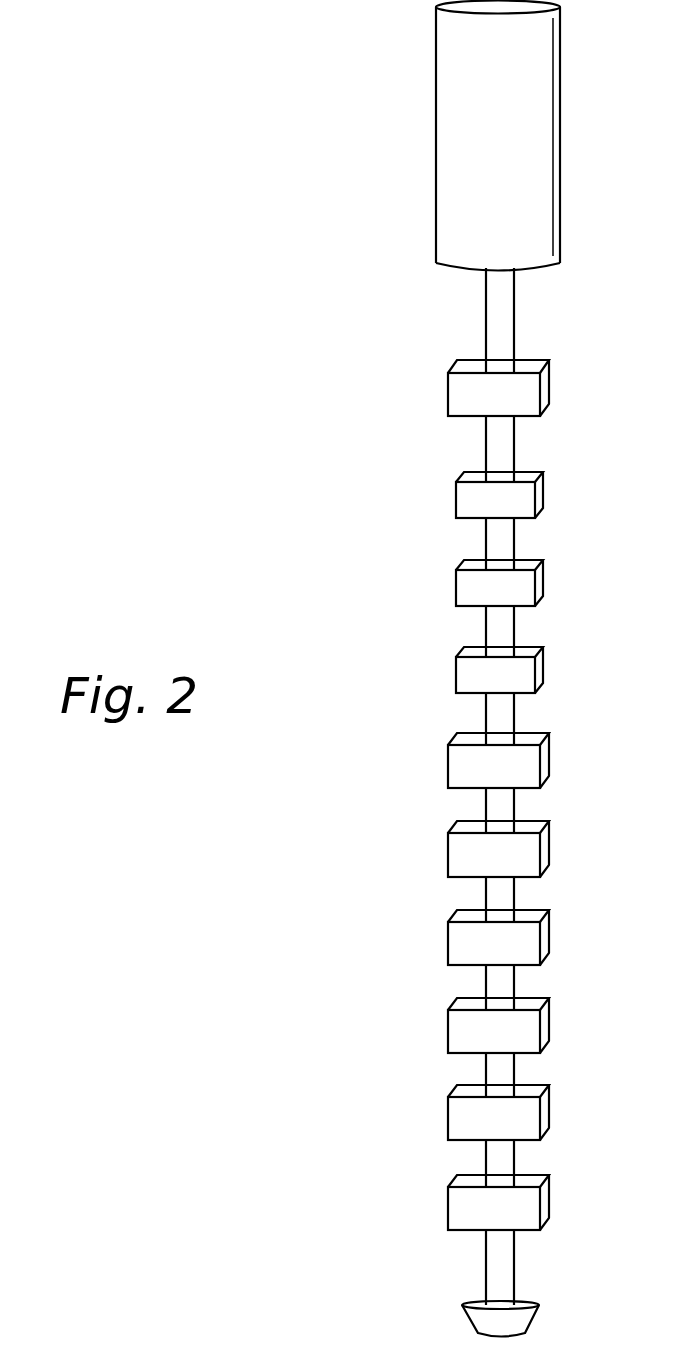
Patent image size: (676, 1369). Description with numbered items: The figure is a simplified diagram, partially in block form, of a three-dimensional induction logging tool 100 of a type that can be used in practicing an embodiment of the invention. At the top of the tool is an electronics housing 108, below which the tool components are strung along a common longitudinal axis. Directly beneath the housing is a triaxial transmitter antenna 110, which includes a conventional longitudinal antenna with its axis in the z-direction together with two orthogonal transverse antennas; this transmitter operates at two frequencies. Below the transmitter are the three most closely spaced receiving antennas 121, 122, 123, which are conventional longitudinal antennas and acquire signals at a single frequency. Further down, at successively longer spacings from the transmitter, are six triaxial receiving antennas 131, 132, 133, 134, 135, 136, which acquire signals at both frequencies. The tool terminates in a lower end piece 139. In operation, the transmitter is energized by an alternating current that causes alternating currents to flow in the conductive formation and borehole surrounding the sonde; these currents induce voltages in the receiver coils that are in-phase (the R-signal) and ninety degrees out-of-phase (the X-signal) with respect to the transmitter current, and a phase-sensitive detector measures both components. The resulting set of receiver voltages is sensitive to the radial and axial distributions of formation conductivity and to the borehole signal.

The three-dimensional induction logging tool 100 is at (197, 221).
The electronics housing 108 is at (436, 135).
The triaxial transmitter antenna 110 is at (448, 387).
The receiving antenna 121 is at (456, 497).
The receiving antenna 122 is at (456, 585).
The receiving antenna 123 is at (456, 673).
The triaxial receiving antenna 131 is at (448, 768).
The triaxial receiving antenna 132 is at (448, 855).
The triaxial receiving antenna 133 is at (448, 940).
The triaxial receiving antenna 134 is at (448, 1028).
The triaxial receiving antenna 135 is at (448, 1115).
The triaxial receiving antenna 136 is at (448, 1205).
The end cap / bull nose 139 is at (462, 1304).